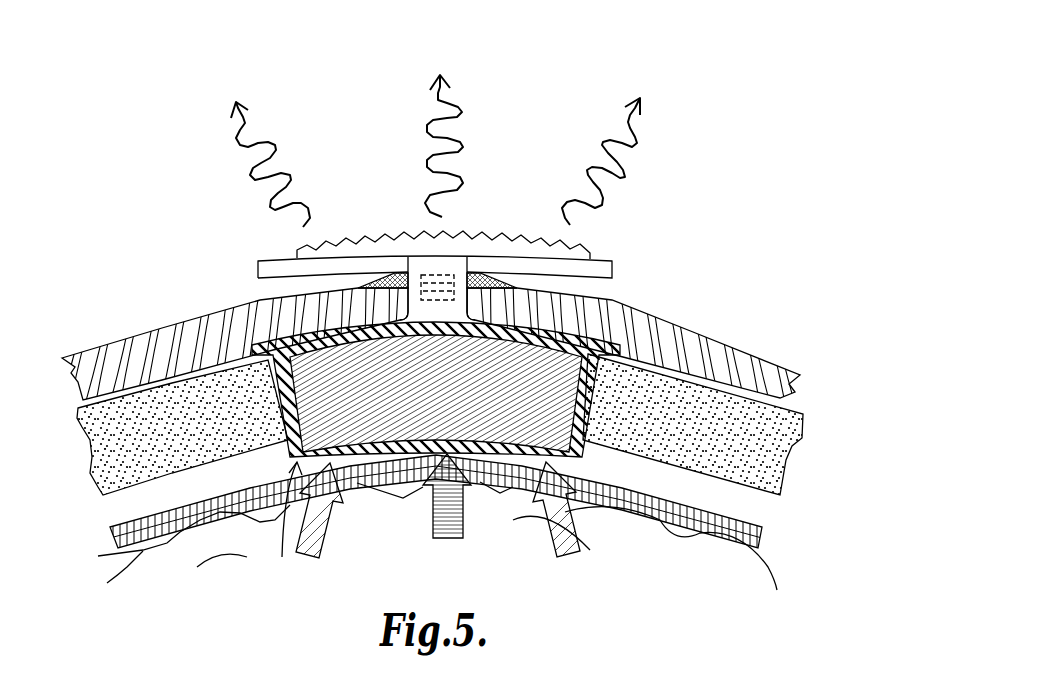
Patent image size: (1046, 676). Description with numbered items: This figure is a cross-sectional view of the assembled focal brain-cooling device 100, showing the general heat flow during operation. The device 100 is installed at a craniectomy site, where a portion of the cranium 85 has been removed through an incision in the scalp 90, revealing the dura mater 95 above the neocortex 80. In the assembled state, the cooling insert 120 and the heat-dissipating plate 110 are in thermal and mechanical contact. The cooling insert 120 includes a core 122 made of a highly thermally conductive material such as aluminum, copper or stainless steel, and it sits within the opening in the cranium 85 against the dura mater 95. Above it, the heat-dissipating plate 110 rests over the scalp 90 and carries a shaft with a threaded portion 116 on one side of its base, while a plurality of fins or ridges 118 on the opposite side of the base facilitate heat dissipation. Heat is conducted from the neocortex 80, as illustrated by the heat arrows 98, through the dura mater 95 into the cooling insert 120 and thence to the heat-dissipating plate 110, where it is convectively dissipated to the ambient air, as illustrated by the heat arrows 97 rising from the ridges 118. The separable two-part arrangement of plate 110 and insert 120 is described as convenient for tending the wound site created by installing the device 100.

The neocortex 80 is at (773, 560).
The cranium 85 is at (92, 454).
The scalp 90 is at (163, 326).
The dura mater 95 is at (763, 528).
The heat arrows 97 is at (637, 133).
The heat arrows 98 is at (325, 538).
The focal brain-cooling device 100 is at (660, 202).
The heat-dissipating plate 110 is at (621, 262).
The threaded portion 116 is at (455, 292).
The fins or ridges 118 is at (374, 234).
The cooling insert 120 is at (282, 517).
The core 122 is at (447, 396).